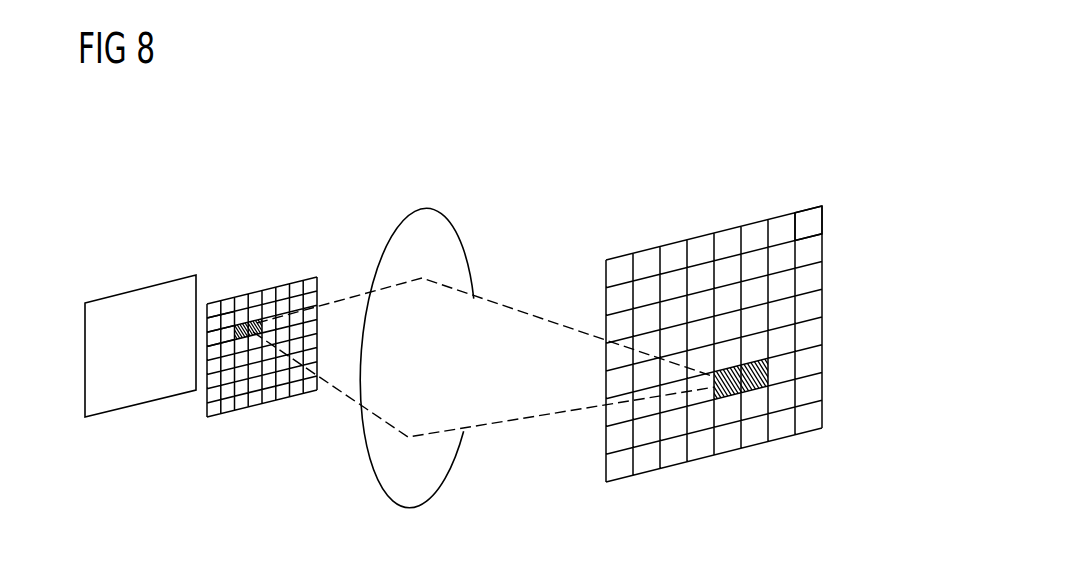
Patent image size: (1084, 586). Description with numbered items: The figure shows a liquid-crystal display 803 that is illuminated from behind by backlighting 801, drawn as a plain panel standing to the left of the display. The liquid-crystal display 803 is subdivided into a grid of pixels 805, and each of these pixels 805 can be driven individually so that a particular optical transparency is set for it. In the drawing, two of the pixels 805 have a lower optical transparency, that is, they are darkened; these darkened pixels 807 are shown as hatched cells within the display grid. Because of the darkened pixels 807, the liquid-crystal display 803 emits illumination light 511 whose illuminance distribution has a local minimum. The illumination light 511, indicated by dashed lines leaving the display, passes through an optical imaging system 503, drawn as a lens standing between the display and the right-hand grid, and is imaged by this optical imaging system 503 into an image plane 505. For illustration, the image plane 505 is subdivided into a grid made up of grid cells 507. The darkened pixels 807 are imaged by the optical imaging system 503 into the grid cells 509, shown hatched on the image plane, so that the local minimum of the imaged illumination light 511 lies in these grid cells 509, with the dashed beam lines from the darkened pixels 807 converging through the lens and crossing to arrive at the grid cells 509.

The backlighting 801 is at (133, 407).
The liquid-crystal display 803 is at (253, 407).
The pixels 805 is at (212, 340).
The darkened pixels 807 is at (253, 326).
The optical imaging system 503 is at (430, 207).
The illumination light 511 is at (337, 390).
The image plane 505 is at (825, 257).
The grid cells 507 is at (813, 222).
The grid cells with local minimum 509 is at (770, 374).